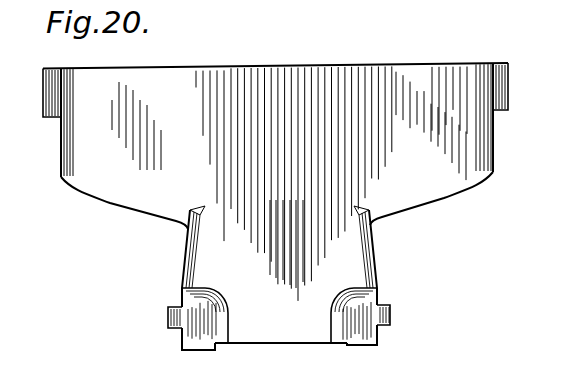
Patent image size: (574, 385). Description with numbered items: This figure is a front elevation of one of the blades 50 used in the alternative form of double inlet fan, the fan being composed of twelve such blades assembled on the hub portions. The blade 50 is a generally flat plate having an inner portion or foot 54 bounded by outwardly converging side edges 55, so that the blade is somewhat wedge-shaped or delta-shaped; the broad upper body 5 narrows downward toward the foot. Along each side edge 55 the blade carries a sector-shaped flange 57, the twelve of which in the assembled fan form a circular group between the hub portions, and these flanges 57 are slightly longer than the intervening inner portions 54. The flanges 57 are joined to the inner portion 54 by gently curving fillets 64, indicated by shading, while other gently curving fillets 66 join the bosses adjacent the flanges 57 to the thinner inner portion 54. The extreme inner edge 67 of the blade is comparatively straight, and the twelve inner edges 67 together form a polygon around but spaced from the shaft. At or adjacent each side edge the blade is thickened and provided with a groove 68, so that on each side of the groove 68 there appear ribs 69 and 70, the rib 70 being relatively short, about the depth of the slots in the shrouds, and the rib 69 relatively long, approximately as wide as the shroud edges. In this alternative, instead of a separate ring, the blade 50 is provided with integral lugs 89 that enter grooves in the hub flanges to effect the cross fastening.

The base plate 5 is at (297, 72).
The blade 50 is at (414, 0).
The inner portion 54 is at (330, 243).
The side edge 55 is at (183, 269).
The sector-shaped flange 57 is at (192, 340).
The fillet 64 is at (487, 78).
The fillet 66 is at (330, 325).
The inner edge 67 is at (366, 347).
The groove 68 is at (58, 68).
The rib 69 is at (62, 149).
The rib 70 is at (45, 109).
The lug 89 is at (168, 318).